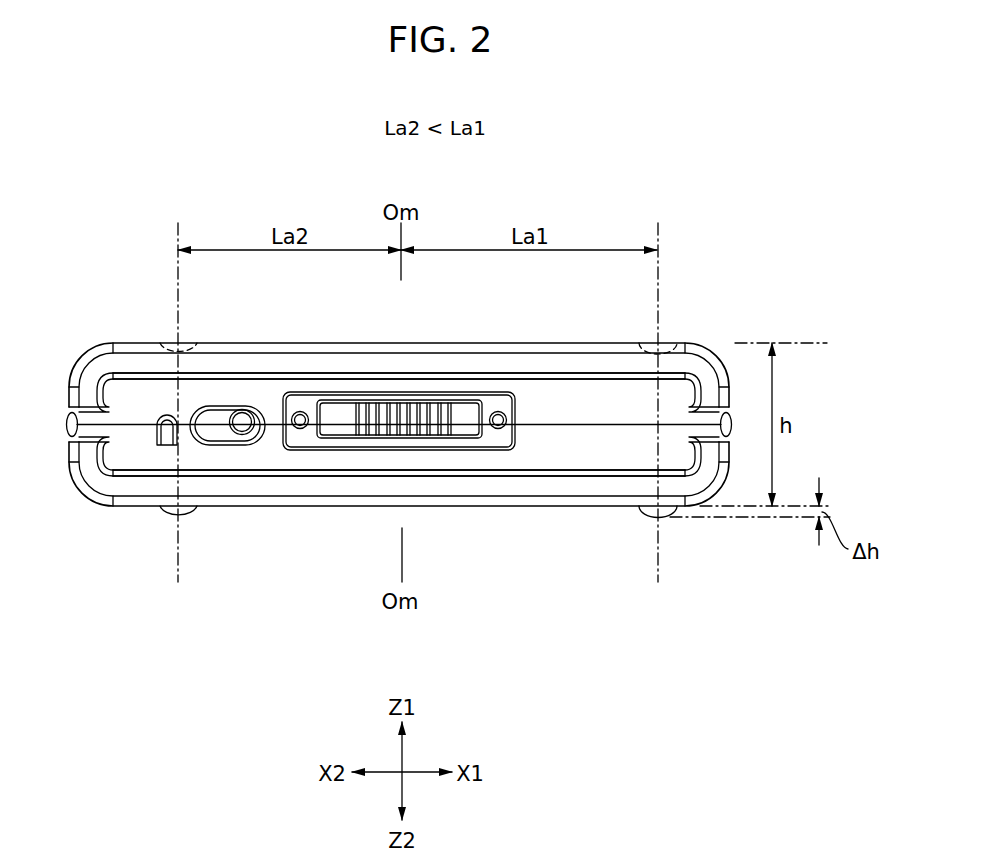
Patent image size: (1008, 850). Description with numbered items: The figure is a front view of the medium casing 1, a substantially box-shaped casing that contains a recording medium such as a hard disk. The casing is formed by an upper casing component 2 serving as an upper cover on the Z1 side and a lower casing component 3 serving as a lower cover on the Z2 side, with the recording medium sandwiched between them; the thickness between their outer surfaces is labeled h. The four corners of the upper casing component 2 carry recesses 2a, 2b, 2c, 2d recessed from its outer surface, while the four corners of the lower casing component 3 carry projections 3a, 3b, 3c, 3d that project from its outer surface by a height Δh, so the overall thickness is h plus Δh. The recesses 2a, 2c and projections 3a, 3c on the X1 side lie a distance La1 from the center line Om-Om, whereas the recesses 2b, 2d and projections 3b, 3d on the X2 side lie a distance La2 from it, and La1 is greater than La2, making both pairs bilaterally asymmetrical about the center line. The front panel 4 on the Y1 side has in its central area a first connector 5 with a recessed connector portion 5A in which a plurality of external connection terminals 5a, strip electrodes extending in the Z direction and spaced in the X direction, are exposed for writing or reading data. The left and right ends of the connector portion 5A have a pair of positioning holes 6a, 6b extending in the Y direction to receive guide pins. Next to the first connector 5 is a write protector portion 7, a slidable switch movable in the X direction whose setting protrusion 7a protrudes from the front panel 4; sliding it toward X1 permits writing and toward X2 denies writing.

The medium casing 1 is at (98, 222).
The upper casing component 2 is at (508, 346).
The recess 2a is at (665, 346).
The recess 2b is at (172, 346).
The recess 2c is at (689, 320).
The recess 2d is at (140, 319).
The lower casing component 3 is at (430, 507).
The projection 3a is at (647, 511).
The projection 3b is at (173, 514).
The projection 3c is at (637, 560).
The projection 3d is at (143, 541).
The front panel 4 is at (577, 456).
The first connector 5 is at (362, 453).
The connector portion 5A is at (468, 431).
The external connection terminals 5a is at (450, 400).
The positioning hole 6a is at (298, 430).
The positioning hole 6b is at (500, 430).
The write protector portion 7 is at (220, 446).
The setting protrusion 7a is at (243, 410).